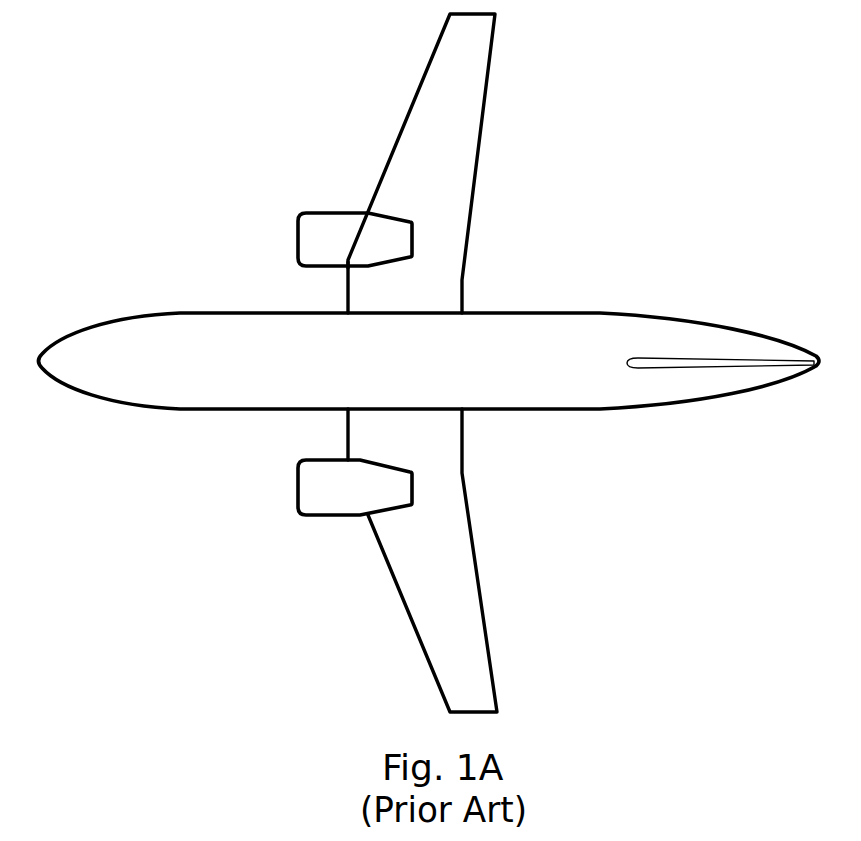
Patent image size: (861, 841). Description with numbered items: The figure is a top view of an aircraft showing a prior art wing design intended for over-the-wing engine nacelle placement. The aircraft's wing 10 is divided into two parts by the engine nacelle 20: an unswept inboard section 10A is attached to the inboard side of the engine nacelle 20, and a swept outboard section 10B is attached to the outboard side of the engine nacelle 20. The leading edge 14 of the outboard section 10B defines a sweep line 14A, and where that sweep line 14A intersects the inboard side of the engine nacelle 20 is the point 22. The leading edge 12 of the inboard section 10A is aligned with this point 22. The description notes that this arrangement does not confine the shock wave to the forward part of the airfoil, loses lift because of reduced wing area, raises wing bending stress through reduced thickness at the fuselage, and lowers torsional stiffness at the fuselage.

The wing 10 is at (429, 363).
The unswept inboard section 10A is at (432, 290).
The swept outboard section 10B is at (462, 120).
The leading edge of inboard section 12 is at (348, 288).
The leading edge of outboard section 14 is at (419, 86).
The sweep line 14A is at (358, 233).
The engine nacelle 20 is at (298, 238).
The point on the inboard side of engine nacelle 22 is at (348, 267).